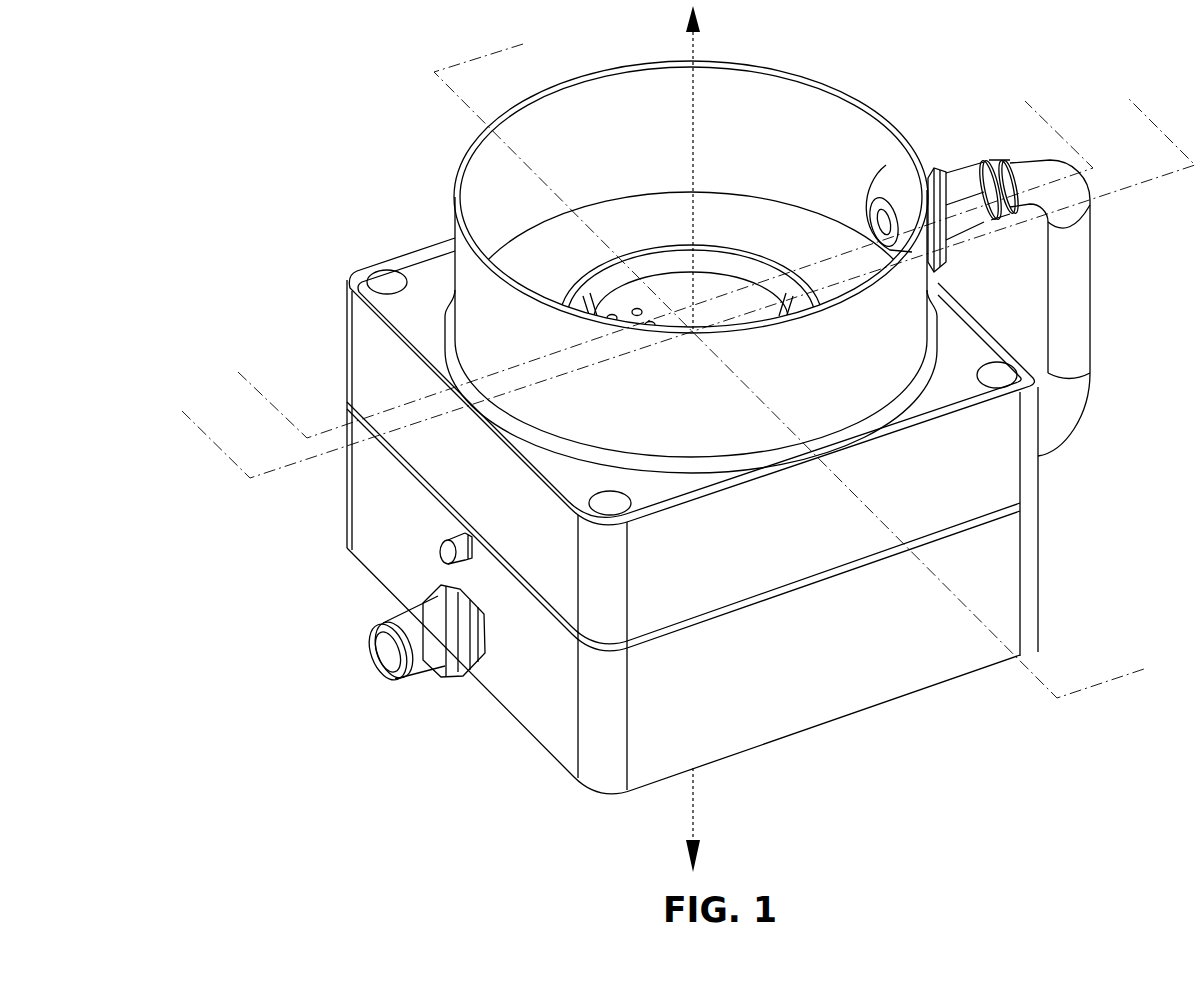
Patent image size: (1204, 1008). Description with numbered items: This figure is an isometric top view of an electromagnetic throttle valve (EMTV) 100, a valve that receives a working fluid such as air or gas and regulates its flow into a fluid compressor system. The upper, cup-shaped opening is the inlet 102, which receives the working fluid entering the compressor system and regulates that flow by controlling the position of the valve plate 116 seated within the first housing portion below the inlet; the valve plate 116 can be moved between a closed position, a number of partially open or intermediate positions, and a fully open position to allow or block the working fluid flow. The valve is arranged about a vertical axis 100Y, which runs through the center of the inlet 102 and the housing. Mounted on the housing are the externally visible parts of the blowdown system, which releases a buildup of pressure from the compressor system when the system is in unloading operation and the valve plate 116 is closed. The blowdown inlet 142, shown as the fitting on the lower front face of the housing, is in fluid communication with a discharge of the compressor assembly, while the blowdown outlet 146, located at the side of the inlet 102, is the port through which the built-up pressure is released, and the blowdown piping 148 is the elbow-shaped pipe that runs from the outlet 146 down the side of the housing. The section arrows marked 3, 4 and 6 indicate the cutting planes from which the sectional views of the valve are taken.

The electromagnetic throttle valve 100 is at (314, 120).
The inlet 102 is at (830, 62).
The valve plate 116 is at (717, 284).
The blowdown inlet 142 is at (418, 644).
The blowdown outlet 146 is at (878, 185).
The blowdown piping 148 is at (1083, 296).
The vertical axis 100Y is at (694, 811).
The section line 3- 3 is at (816, 358).
The section line 4- 4 is at (666, 268).
The section line 6- 6 is at (644, 248).